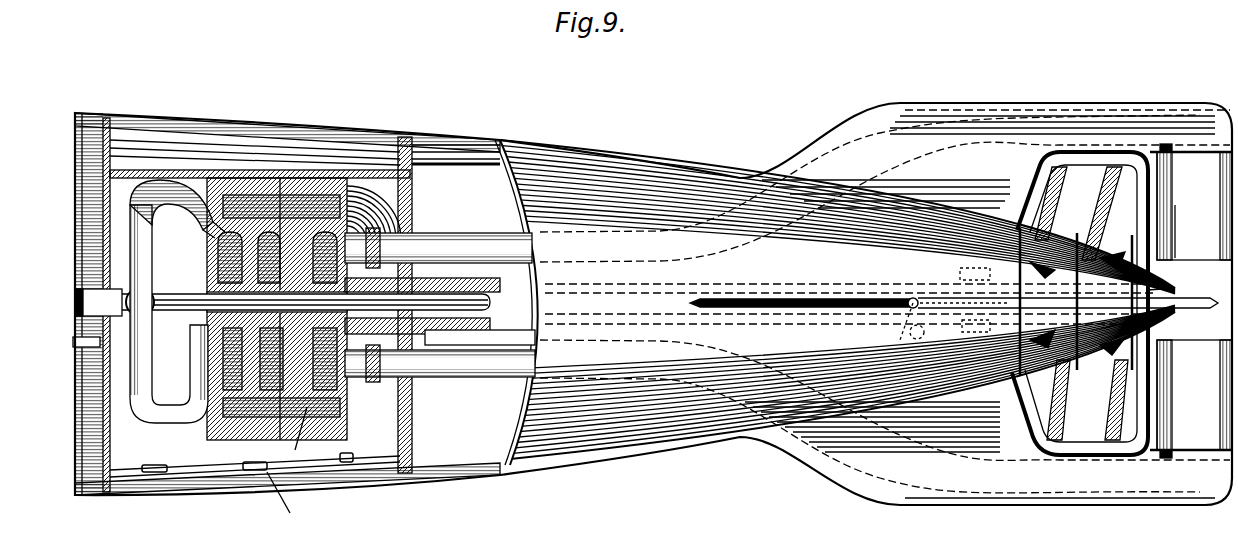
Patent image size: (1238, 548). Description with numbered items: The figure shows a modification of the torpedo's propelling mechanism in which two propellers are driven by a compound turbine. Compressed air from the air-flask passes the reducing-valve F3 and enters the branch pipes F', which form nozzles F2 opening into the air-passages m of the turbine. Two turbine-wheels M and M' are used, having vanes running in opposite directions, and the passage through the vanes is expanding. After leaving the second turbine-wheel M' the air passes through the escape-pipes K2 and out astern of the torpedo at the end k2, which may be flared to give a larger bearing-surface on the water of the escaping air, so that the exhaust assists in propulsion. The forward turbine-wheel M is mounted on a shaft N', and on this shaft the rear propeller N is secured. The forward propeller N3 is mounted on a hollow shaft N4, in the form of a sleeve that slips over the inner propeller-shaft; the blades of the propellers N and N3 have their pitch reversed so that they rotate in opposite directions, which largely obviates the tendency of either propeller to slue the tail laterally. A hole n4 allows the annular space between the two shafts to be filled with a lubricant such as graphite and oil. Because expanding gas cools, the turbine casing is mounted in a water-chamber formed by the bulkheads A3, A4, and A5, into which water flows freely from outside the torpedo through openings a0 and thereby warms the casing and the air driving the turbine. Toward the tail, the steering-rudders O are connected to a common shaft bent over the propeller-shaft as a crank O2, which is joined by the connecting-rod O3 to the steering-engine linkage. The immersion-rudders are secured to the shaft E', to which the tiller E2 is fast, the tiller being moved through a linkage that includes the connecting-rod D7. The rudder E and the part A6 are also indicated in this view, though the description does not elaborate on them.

The bulkhead A3 is at (117, 467).
The bulkhead A4 is at (408, 447).
The bulkhead A5 is at (170, 171).
The tail cone A6 is at (1180, 290).
The connecting-rod D7 is at (443, 162).
The rudder E is at (1191, 301).
The shaft E' is at (1185, 221).
The tiller E2 is at (1186, 244).
The branch pipe F' is at (114, 284).
The nozzle F2 is at (197, 377).
The reducing-valve F3 is at (203, 287).
The escape-pipe K2 is at (443, 372).
The end of escape-pipe k2 is at (1210, 480).
The forward turbine-wheel M is at (256, 316).
The second turbine-wheel M' is at (295, 437).
The air-passage m is at (352, 425).
The rear propeller N is at (1076, 328).
The propeller-shaft N' is at (837, 300).
The forward propeller N3 is at (1048, 397).
The hollow shaft N4 is at (483, 330).
The hole n4 is at (540, 312).
The steering-rudder O is at (945, 316).
The crank O2 is at (908, 332).
The connecting-rod O3 is at (100, 342).
The opening a0 is at (292, 500).